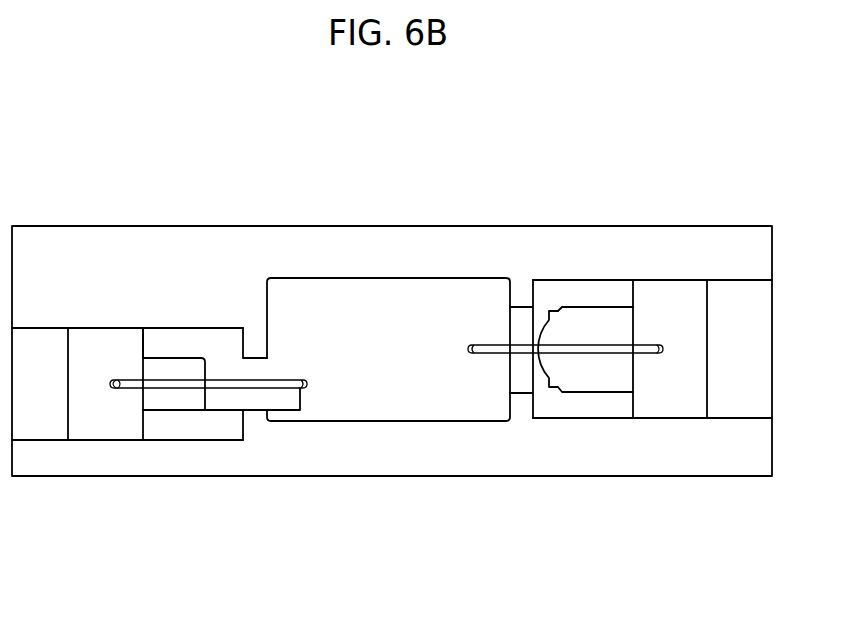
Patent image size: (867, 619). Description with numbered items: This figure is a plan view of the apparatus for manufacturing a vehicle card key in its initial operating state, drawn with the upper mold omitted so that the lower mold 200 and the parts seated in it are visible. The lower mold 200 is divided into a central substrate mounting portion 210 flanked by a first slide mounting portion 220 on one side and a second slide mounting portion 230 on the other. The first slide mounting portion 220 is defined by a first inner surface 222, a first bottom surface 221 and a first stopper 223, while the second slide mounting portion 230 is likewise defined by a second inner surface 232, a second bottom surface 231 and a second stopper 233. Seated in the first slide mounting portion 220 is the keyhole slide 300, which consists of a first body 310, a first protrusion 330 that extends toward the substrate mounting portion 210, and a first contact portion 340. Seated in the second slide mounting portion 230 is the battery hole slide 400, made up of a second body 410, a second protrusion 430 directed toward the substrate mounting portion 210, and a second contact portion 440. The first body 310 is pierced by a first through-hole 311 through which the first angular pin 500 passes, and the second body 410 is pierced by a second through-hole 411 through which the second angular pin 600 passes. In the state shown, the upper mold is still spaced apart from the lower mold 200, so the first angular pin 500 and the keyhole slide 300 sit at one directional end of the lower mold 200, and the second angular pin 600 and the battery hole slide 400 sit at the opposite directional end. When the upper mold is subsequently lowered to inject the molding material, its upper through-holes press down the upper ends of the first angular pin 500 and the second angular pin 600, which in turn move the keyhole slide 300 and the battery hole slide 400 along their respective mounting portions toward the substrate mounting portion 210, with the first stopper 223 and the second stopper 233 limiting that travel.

The lower mold 200 is at (457, 477).
The substrate mounting portion 210 is at (388, 383).
The first slide mounting portion 220 is at (221, 233).
The first bottom surface 221 is at (202, 343).
The first inner surface 222 is at (162, 334).
The first stopper 223 is at (242, 343).
The second slide mounting portion 230 is at (641, 257).
The second bottom surface 231 is at (603, 295).
The second inner surface 232 is at (733, 288).
The second stopper 233 is at (540, 290).
The keyhole slide 300 is at (156, 388).
The first body 310 is at (103, 413).
The first through-hole 311 is at (122, 378).
The first protrusion 330 is at (228, 400).
The first contact portion 340 is at (145, 426).
The battery hole slide 400 is at (628, 433).
The second body 410 is at (684, 407).
The second through-hole 411 is at (662, 345).
The second protrusion 430 is at (558, 370).
The second contact portion 440 is at (630, 405).
The first angular pin 500 is at (280, 383).
The second angular pin 600 is at (500, 345).